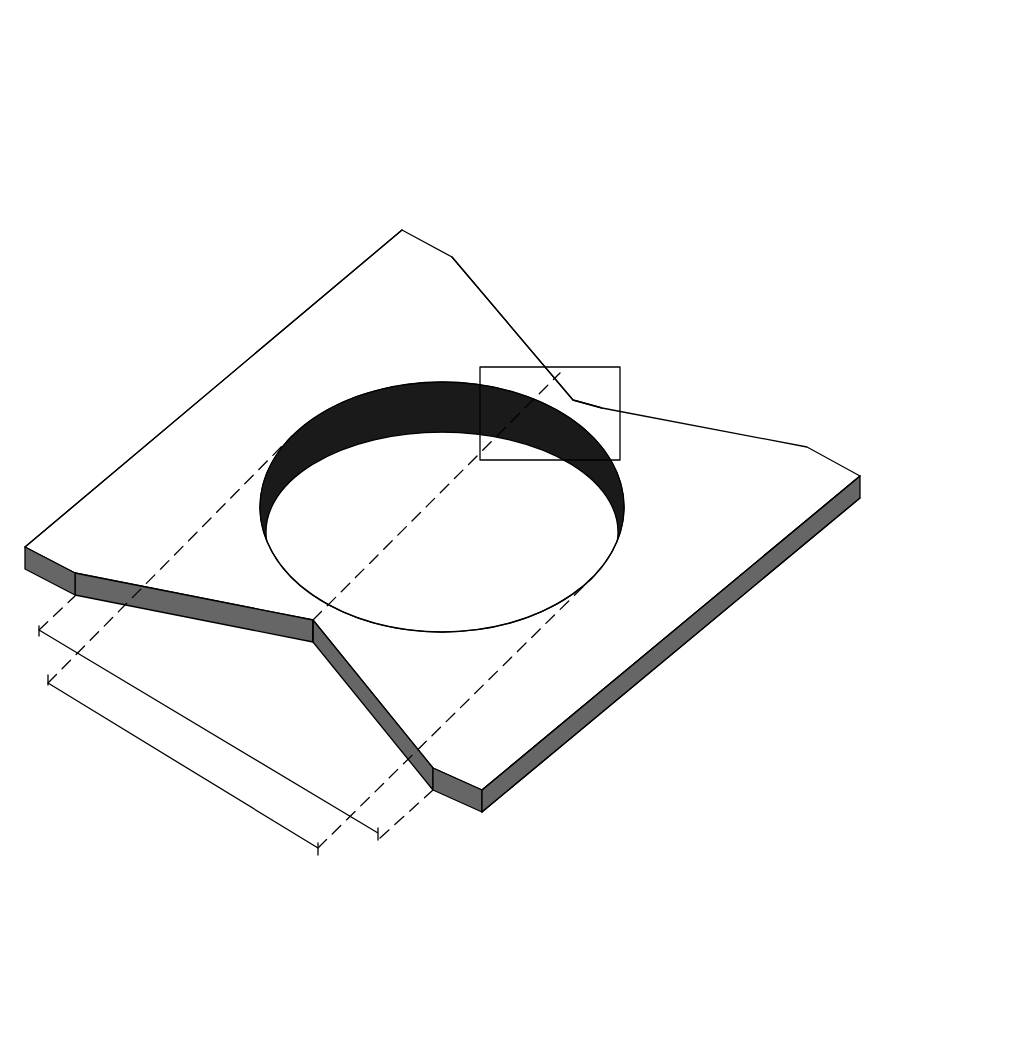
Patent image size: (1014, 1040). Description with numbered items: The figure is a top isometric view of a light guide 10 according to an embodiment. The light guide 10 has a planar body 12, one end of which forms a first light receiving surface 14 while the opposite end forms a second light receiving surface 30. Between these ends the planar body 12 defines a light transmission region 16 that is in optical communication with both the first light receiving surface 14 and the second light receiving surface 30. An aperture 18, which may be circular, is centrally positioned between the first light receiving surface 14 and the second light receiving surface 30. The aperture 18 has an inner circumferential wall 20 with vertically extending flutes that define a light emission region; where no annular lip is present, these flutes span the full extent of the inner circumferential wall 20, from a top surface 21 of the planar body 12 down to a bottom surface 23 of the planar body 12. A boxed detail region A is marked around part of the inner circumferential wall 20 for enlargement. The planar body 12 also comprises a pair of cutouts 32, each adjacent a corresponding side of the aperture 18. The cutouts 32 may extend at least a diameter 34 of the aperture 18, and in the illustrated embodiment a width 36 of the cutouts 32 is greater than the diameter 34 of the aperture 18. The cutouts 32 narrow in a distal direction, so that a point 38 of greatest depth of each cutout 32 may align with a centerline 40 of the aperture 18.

The light guide 10 is at (158, 124).
The planar body 12 is at (432, 218).
The first light receiving surface 14 is at (293, 310).
The light transmission region 16 is at (398, 344).
The aperture 18 is at (388, 513).
The inner circumferential wall 20 is at (302, 435).
The top surface 21 is at (800, 527).
The bottom surface 23 is at (765, 578).
The second light receiving surface 30 is at (695, 643).
The cutout 32 is at (657, 390).
The diameter 34 is at (175, 763).
The width 36 is at (367, 833).
The point of greatest depth 38 is at (313, 622).
The centerline 40 is at (412, 520).
The detail region A is at (573, 367).